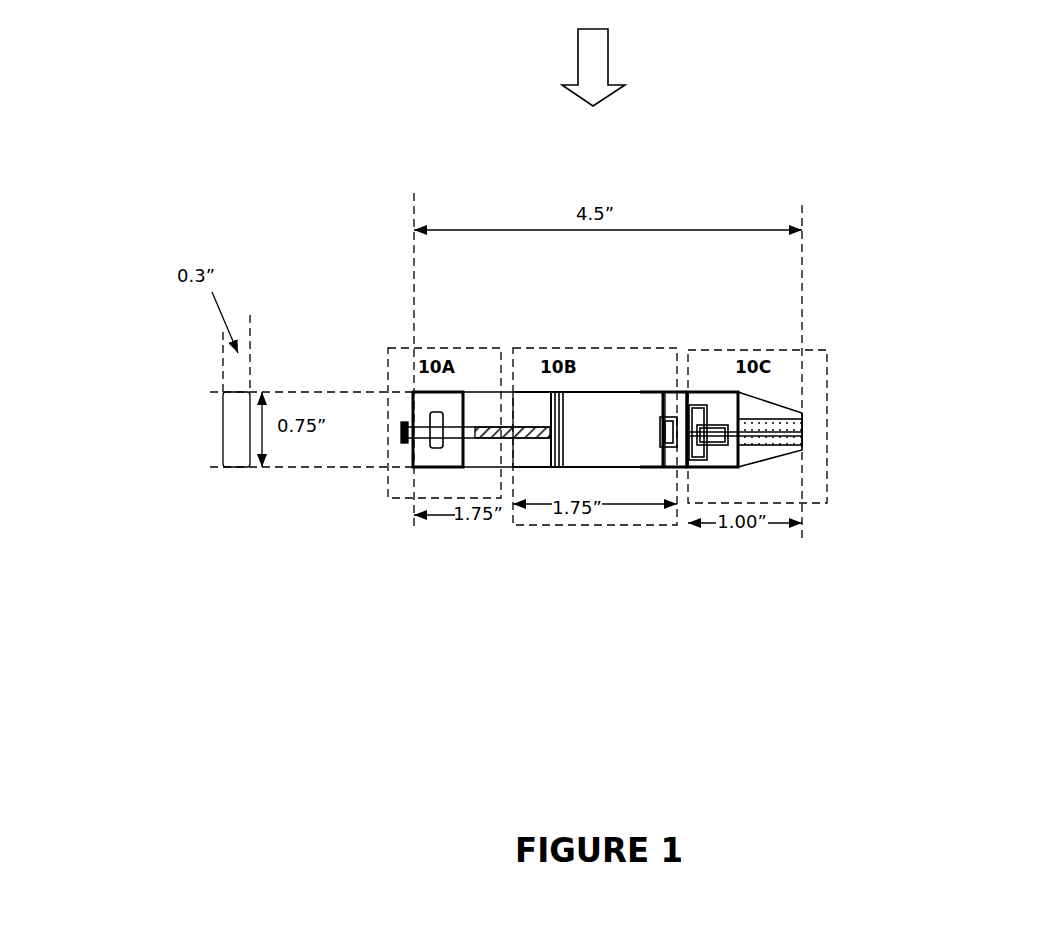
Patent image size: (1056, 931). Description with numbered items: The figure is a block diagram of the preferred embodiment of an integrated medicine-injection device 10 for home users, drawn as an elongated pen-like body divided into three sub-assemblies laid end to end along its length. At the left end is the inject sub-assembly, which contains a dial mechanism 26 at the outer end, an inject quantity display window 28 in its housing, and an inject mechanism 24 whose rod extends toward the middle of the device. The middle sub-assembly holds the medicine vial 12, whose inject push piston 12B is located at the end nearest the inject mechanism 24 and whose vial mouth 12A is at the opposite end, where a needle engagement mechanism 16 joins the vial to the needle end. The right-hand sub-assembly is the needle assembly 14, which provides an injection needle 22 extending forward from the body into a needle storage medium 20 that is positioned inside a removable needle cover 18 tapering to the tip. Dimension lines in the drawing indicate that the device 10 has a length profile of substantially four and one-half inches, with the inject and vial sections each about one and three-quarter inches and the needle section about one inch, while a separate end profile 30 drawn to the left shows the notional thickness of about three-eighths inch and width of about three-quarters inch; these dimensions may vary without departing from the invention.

The device 10 is at (610, 56).
The medicine vial 12 is at (628, 470).
The vial mouth 12A is at (680, 442).
The inject push piston 12B is at (559, 448).
The needle assembly 14 is at (766, 348).
The needle engagement mechanism 16 is at (678, 392).
The removable needle cover 18 is at (782, 403).
The needle storage medium 20 is at (793, 434).
The injection needle 22 is at (728, 444).
The inject mechanism 24 is at (497, 445).
The dial mechanism 26 is at (412, 458).
The inject quantity display window 28 is at (435, 407).
The device cross-section 30 is at (201, 415).